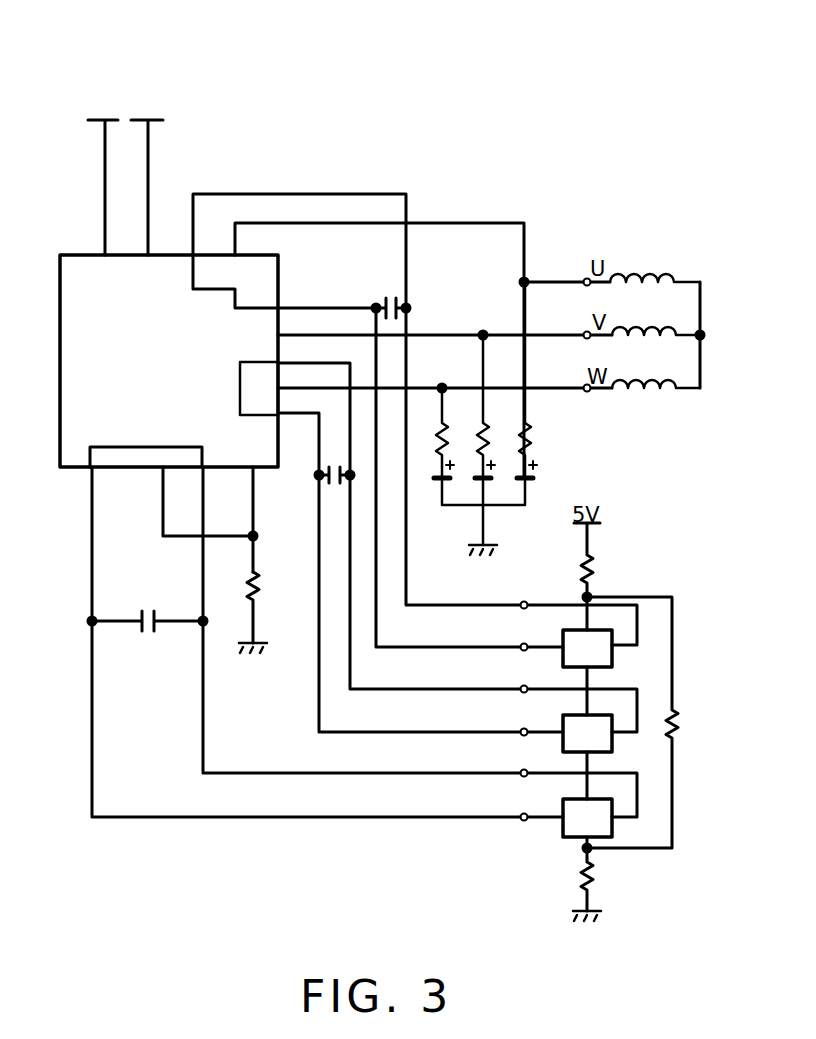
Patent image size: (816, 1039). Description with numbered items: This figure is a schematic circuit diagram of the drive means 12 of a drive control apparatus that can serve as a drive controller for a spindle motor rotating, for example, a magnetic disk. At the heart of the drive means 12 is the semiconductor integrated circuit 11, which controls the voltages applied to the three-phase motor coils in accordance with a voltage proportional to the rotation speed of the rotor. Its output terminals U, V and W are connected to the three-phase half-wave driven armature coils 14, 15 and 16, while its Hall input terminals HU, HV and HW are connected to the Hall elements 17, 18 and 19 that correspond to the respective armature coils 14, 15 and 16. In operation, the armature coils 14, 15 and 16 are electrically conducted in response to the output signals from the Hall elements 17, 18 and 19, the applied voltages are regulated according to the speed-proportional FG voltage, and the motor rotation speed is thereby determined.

The semiconductor integrated circuit (IC2) 11 is at (78, 253).
The drive means 12 is at (106, 83).
The armature coil (U) 14 is at (641, 281).
The armature coil (V) 15 is at (640, 333).
The armature coil (W) 16 is at (643, 387).
The Hall element (HU) 17 is at (612, 661).
The Hall element (HV) 18 is at (612, 746).
The Hall element (HW) 19 is at (612, 831).